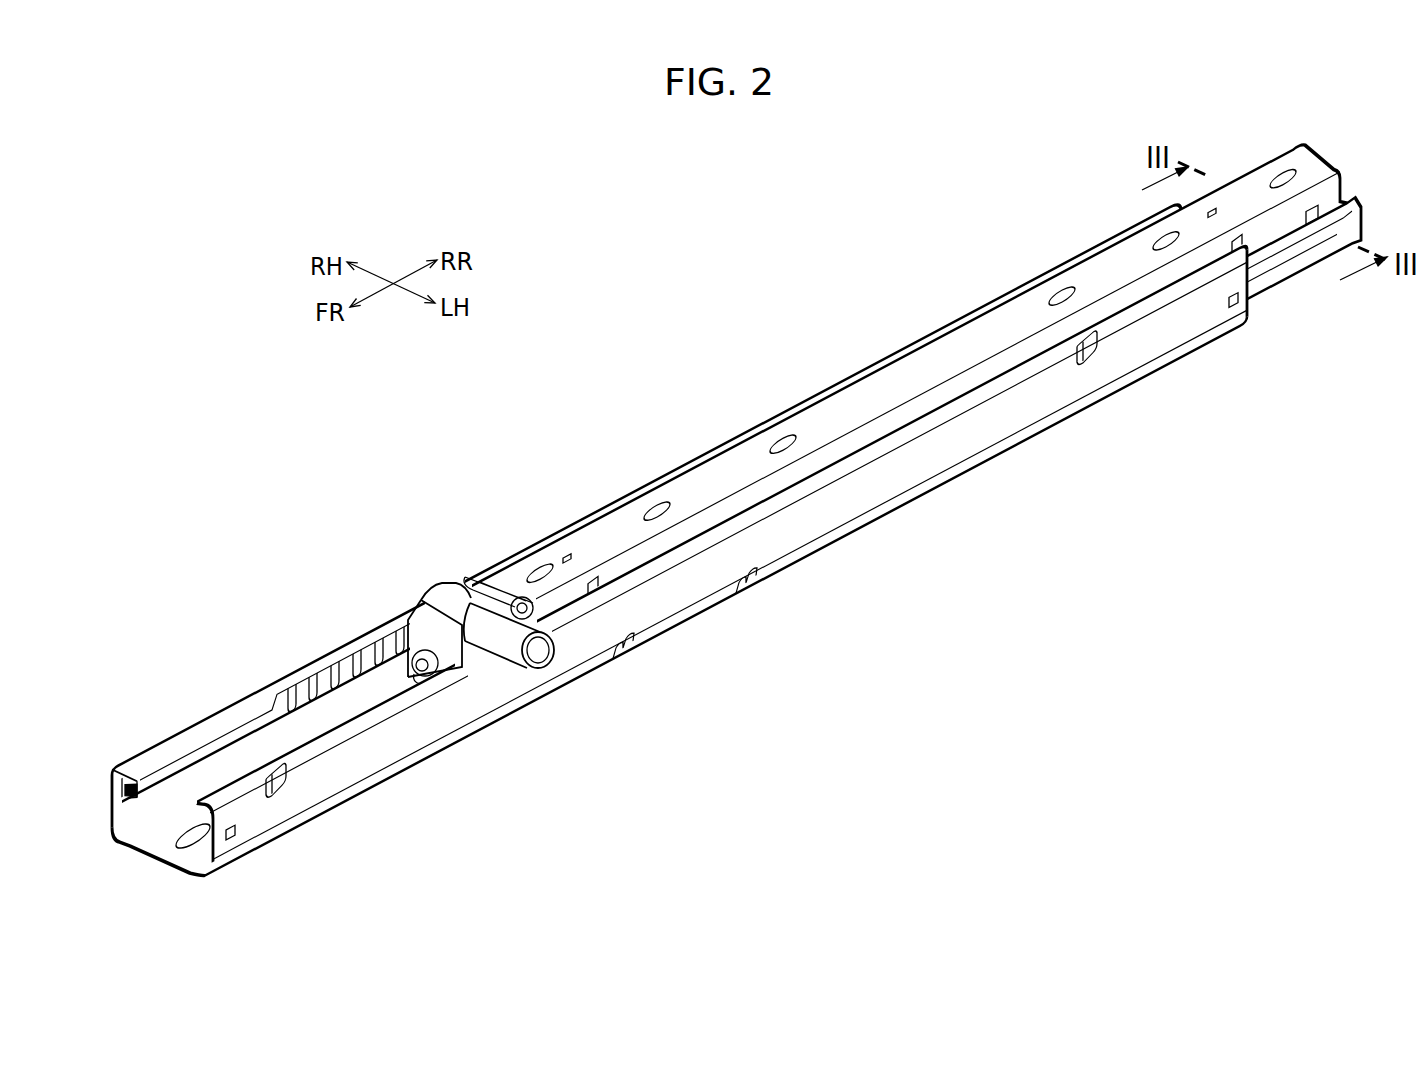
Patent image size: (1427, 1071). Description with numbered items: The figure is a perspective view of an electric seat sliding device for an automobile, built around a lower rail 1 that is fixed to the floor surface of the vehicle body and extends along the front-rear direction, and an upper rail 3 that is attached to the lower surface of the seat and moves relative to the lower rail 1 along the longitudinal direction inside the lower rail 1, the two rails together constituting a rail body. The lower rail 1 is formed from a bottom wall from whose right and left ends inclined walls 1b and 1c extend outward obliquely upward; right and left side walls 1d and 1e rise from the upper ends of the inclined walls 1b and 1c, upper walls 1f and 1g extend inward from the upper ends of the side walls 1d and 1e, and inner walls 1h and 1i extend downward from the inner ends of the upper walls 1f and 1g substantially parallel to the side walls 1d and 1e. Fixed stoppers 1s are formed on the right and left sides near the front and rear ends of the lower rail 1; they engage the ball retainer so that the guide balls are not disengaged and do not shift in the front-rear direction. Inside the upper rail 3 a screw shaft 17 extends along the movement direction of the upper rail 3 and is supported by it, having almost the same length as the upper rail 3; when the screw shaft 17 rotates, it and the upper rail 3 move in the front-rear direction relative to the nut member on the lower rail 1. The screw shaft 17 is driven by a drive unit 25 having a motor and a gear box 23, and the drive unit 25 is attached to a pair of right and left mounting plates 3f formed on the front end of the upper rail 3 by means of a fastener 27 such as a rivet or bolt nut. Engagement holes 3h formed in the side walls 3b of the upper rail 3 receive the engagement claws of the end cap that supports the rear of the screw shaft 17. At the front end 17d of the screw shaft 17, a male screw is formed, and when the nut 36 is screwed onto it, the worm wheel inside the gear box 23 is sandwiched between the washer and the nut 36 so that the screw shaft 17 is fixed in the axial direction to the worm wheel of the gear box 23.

The lower rail 1 is at (896, 522).
The inclined wall 1b is at (215, 868).
The inclined wall 1c is at (125, 822).
The side wall 1d is at (1033, 412).
The side wall 1e is at (115, 800).
The upper wall 1f is at (953, 412).
The upper wall 1g is at (225, 717).
The inner wall 1h is at (185, 815).
The inner wall 1i is at (150, 773).
The fixed stopper 1s is at (292, 790).
The upper rail 3 is at (803, 415).
The top wall of upper rail 3a is at (1258, 183).
The side wall 3b is at (1278, 218).
The mounting plate 3f is at (474, 578).
The engagement hole 3h is at (1315, 210).
The screw shaft 17 is at (417, 680).
The front end 17d is at (421, 671).
The gear box 23 is at (443, 592).
The drive unit 25 is at (415, 585).
The fastener 27 is at (530, 602).
The nut 36 is at (418, 650).